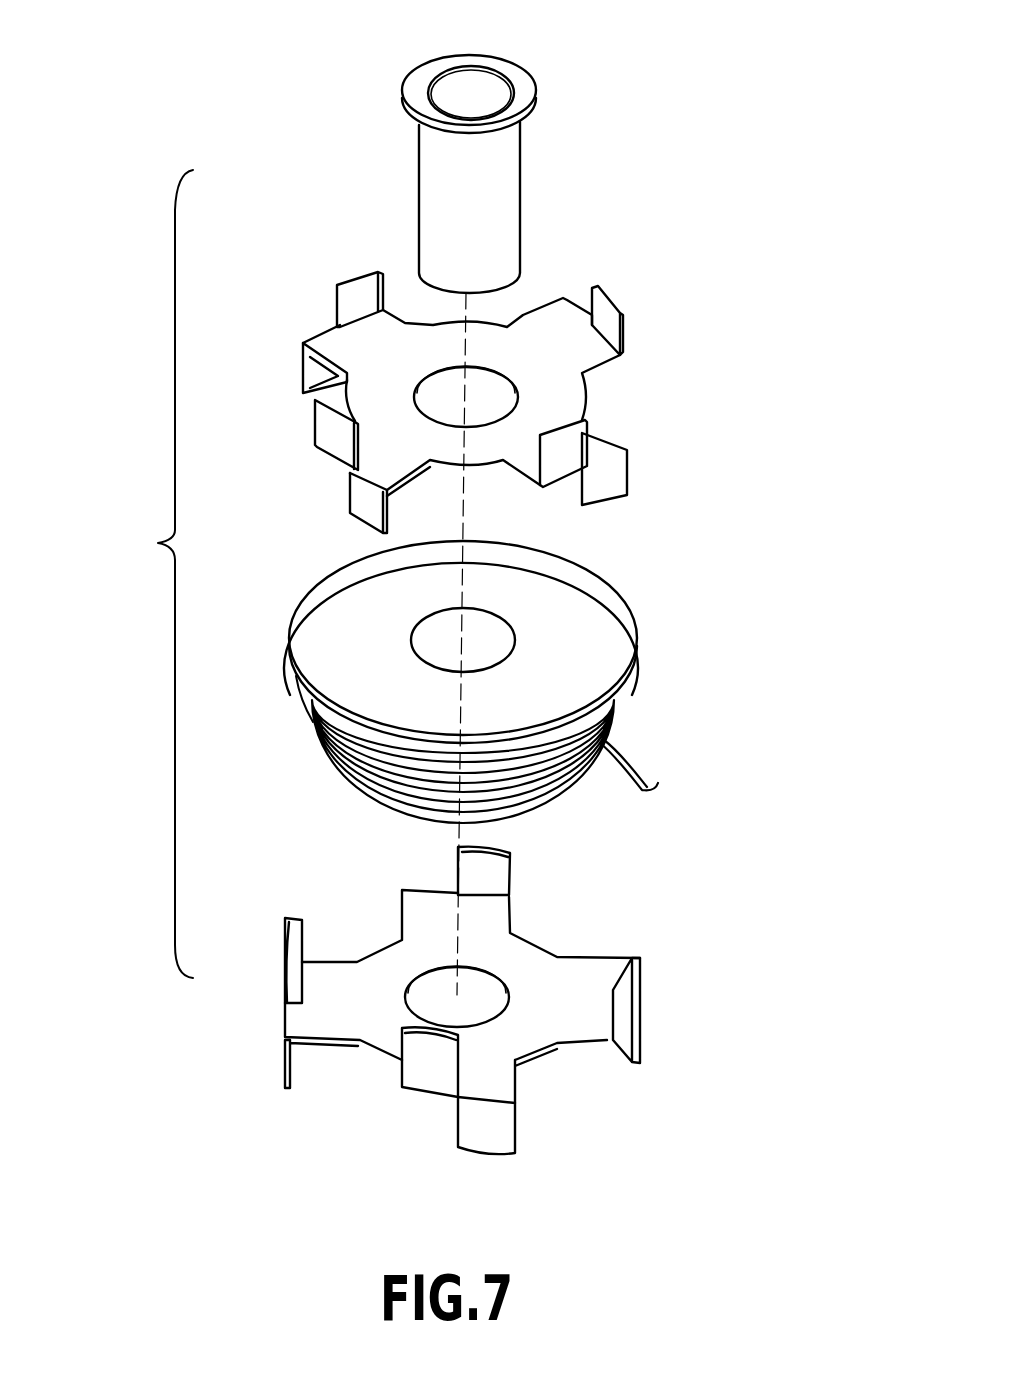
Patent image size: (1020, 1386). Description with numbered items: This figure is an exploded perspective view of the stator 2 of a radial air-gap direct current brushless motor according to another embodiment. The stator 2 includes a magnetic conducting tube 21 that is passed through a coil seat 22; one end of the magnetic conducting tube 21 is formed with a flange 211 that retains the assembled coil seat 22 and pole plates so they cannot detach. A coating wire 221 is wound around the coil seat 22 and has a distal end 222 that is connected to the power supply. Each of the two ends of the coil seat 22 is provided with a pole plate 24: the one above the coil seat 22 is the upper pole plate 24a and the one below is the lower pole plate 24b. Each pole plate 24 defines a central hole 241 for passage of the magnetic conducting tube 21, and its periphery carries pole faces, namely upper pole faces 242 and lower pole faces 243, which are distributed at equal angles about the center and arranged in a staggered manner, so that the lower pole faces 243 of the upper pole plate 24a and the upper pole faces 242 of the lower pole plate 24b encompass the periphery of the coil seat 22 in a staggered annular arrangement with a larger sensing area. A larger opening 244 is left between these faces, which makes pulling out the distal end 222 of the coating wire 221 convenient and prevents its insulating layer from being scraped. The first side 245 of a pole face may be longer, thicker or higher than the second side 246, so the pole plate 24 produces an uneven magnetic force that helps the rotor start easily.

The stator 2 is at (462, 608).
The magnetic conducting tube 21 is at (468, 148).
The flange 211 is at (406, 90).
The coil seat 22 is at (536, 684).
The coating wire 221 is at (613, 708).
The distal end 222 is at (645, 775).
The pole plate 24 is at (300, 268).
The upper pole plate 24a is at (373, 360).
The lower pole plate 24b is at (370, 972).
The central hole 241 is at (450, 397).
The upper pole face 242 is at (623, 317).
The lower pole face 243 is at (613, 483).
The larger opening 244 is at (565, 495).
The first side 245 is at (587, 303).
The second side 246 is at (625, 338).